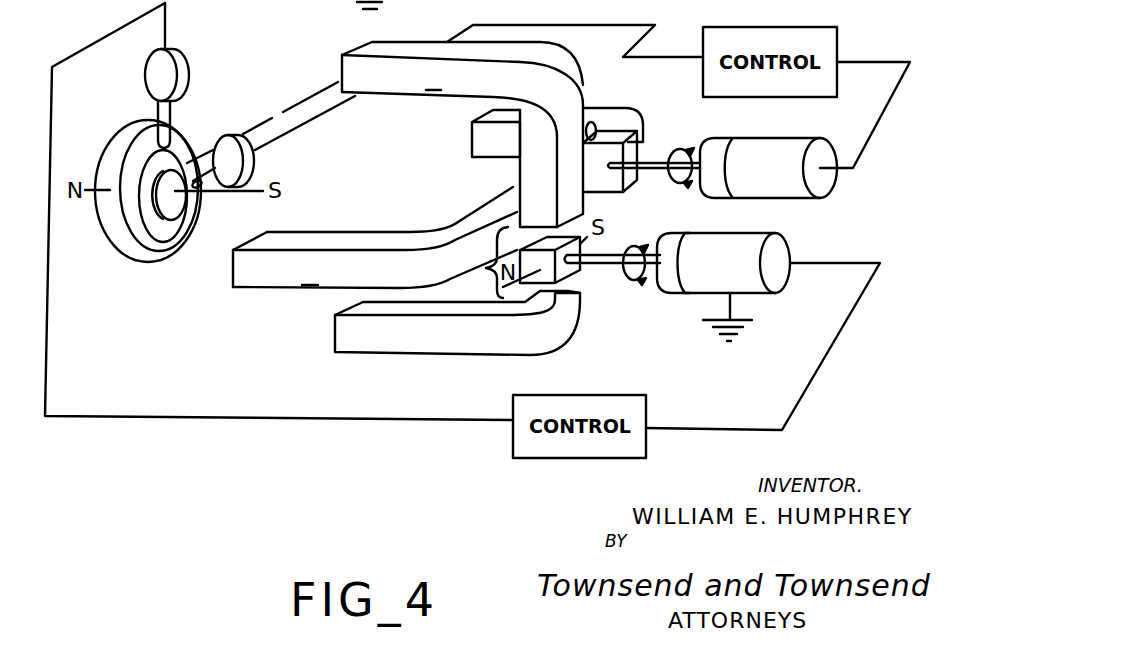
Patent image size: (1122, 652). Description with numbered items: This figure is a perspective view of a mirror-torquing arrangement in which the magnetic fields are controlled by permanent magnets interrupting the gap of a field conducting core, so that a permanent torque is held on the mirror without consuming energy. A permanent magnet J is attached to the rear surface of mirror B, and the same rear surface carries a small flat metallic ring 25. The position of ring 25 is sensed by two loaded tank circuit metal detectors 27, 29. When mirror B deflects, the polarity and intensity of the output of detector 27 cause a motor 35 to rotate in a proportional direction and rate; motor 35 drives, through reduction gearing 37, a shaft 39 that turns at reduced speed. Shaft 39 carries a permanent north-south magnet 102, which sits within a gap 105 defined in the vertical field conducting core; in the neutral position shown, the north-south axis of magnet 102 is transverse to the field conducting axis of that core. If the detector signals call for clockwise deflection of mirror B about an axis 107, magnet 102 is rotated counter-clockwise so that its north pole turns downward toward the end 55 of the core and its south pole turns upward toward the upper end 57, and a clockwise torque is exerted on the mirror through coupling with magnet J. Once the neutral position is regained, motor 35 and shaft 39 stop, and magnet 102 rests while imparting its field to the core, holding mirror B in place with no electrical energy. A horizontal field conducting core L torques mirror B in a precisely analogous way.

The metallic ring 25 is at (147, 236).
The loaded tank circuit metal detector 27 is at (180, 65).
The loaded tank circuit metal detector 29 is at (247, 164).
The motor 35 is at (709, 274).
The reduction gearing 37 is at (678, 248).
The shaft 39 is at (605, 253).
The end of field conducting core 55 is at (398, 348).
The upper end of field conducting core 57 is at (396, 90).
The permanent north-south magnet 102 is at (567, 270).
The gap 105 is at (483, 268).
The axis 107 is at (122, 200).
The mirror B is at (112, 242).
The permanent magnet J is at (170, 212).
The field conducting core L is at (375, 237).